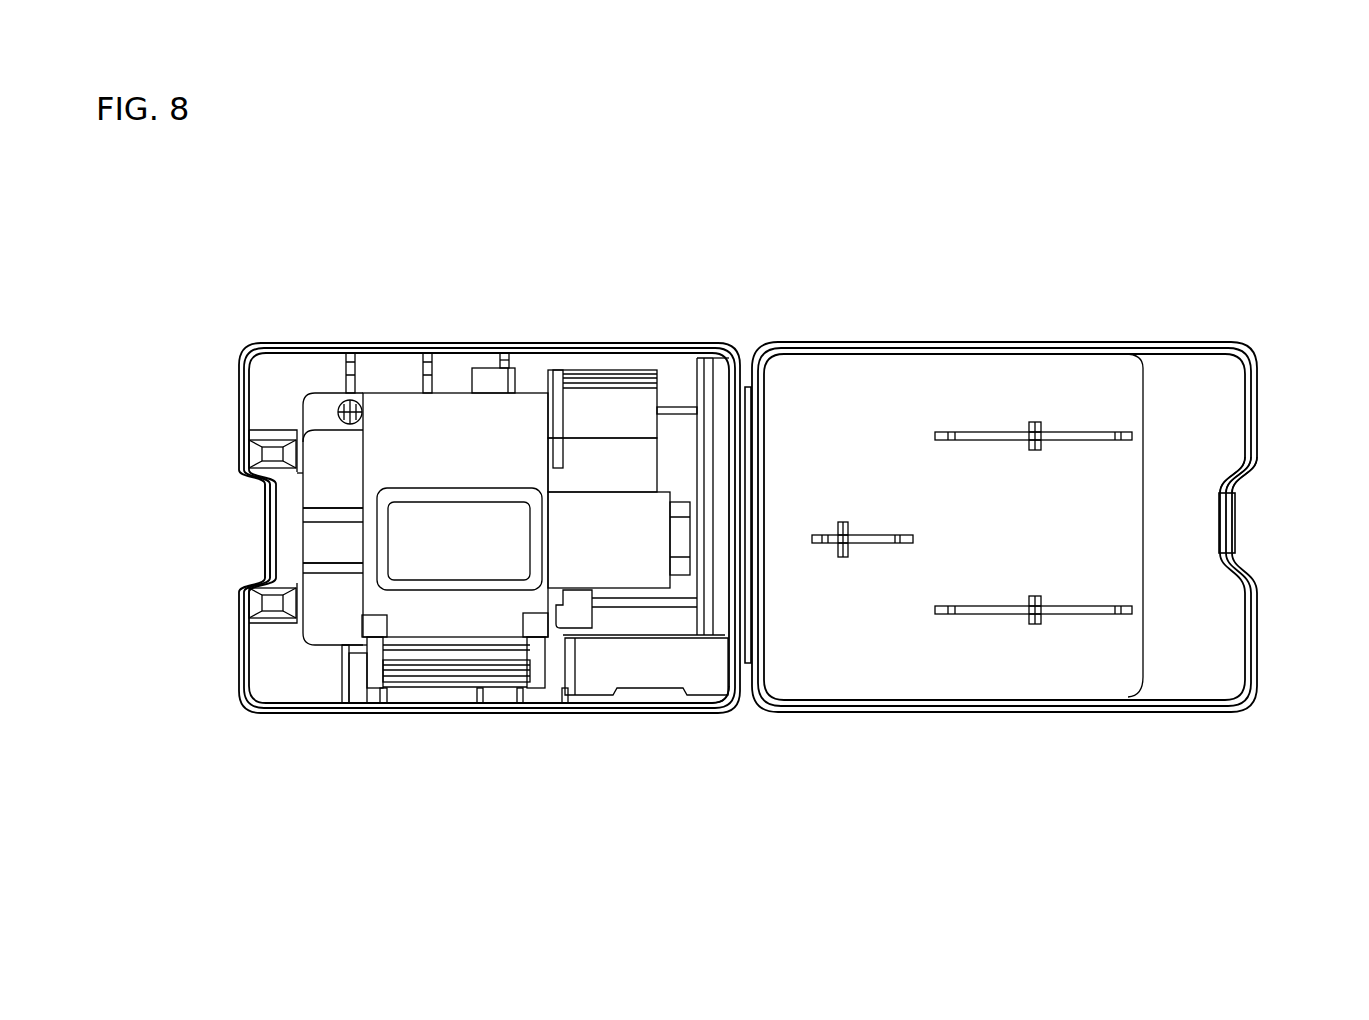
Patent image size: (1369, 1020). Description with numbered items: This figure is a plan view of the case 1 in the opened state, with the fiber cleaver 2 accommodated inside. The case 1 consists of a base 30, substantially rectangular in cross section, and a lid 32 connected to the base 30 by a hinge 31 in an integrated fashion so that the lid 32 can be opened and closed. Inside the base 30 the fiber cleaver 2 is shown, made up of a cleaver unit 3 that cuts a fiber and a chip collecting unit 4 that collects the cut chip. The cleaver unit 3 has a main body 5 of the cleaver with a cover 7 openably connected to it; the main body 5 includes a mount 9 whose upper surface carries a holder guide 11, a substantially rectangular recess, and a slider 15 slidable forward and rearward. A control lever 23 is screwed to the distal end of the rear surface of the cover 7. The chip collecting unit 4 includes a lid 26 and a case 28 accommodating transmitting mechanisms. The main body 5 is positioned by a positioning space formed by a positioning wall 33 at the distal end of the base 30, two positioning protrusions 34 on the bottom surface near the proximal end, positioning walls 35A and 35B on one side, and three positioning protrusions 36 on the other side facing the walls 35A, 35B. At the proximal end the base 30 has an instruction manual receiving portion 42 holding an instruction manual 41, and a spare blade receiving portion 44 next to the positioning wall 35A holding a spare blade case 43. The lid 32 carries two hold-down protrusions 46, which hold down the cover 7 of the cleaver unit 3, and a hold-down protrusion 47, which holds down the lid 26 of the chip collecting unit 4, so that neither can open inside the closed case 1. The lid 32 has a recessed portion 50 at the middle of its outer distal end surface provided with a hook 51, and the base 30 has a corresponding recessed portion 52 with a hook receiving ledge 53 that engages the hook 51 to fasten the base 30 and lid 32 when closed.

The case 1 is at (712, 230).
The fiber cleaver 2 is at (292, 378).
The cleaver unit 3 is at (393, 390).
The chip collecting unit 4 is at (603, 369).
The main body of the cleaver 5 is at (299, 416).
The cover 7 is at (448, 425).
The mount 9 is at (328, 483).
The holder guide 11 is at (325, 540).
The slider 15 is at (491, 385).
The control lever 23 is at (440, 668).
The lid 26 is at (617, 563).
The case accommodating transmitting mechanisms 28 is at (627, 415).
The base 30 is at (547, 341).
The hinge 31 is at (748, 455).
The lid 32 is at (929, 341).
The positioning wall 33 is at (267, 620).
The positioning protrusions 34 is at (678, 408).
The positioning wall 35A is at (478, 690).
The positioning wall 35B is at (343, 692).
The positioning protrusions 36 is at (348, 373).
The instruction manual 41 is at (727, 378).
The instruction manual receiving portion 42 is at (703, 398).
The spare blade case 43 is at (731, 702).
The spare blade receiving portion 44 is at (655, 700).
The hold-down protrusions 46 is at (1032, 432).
The hold-down protrusion 47 is at (840, 547).
The recessed portion 50 is at (1233, 485).
The hook 51 is at (1225, 525).
The recessed portion 52 is at (268, 556).
The hook receiving ledge 53 is at (275, 507).